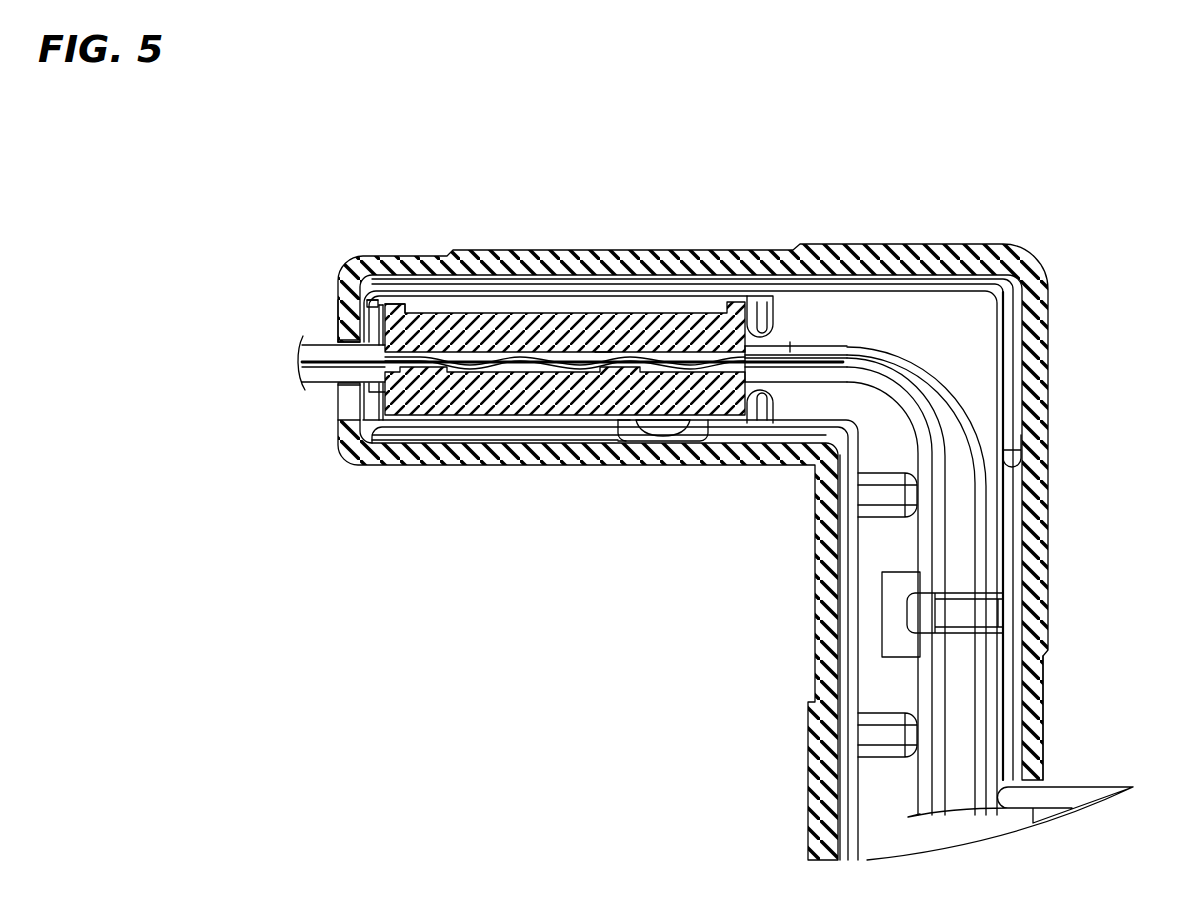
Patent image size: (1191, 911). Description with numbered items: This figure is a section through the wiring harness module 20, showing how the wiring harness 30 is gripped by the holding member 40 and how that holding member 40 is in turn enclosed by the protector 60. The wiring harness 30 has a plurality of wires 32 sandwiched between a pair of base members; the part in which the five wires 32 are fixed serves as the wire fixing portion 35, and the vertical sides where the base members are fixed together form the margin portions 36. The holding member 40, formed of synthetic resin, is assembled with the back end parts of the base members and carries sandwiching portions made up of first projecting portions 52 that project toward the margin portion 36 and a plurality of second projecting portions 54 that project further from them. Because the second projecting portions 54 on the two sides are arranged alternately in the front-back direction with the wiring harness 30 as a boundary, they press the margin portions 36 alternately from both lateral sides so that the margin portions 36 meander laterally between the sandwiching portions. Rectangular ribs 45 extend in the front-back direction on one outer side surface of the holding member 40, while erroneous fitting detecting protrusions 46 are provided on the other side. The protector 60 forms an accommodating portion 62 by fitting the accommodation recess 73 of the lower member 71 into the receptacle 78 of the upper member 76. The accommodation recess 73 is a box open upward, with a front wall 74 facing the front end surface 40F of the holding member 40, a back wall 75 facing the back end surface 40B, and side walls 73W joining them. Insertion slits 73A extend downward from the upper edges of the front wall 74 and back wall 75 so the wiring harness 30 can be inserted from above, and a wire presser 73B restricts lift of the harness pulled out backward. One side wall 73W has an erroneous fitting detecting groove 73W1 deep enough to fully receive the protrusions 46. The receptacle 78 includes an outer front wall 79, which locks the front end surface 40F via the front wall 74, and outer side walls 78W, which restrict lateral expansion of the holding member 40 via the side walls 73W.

The wiring harness module 20 is at (605, 196).
The wiring harness 30 is at (826, 330).
The wires 32 is at (935, 390).
The wire fixing portion 35 is at (787, 372).
The margin portions 36 is at (757, 372).
The holding member 40 is at (533, 432).
The front end surface of the holding member 40F is at (364, 323).
The back end surface of the holding member 40B is at (760, 342).
The rectangular ribs 45 is at (602, 340).
The erroneous fitting detecting protrusions 46 is at (662, 435).
The first projecting portions 52 is at (442, 403).
The second projecting portions 54 is at (590, 368).
The protector 60 is at (1043, 677).
The accommodating portion 62 is at (688, 482).
The lower member 71 is at (1010, 580).
The accommodation recess 73 is at (426, 287).
The insertion slits 73A is at (797, 345).
The wire presser 73B is at (917, 615).
The side walls 73W is at (492, 432).
The erroneous fitting detecting groove 73W1 is at (633, 437).
The front wall 74 is at (347, 330).
The back wall 75 is at (765, 418).
The upper member 76 is at (1084, 718).
The receptacle 78 is at (470, 263).
The outer side walls 78W is at (727, 290).
The outer front wall 79 is at (342, 327).